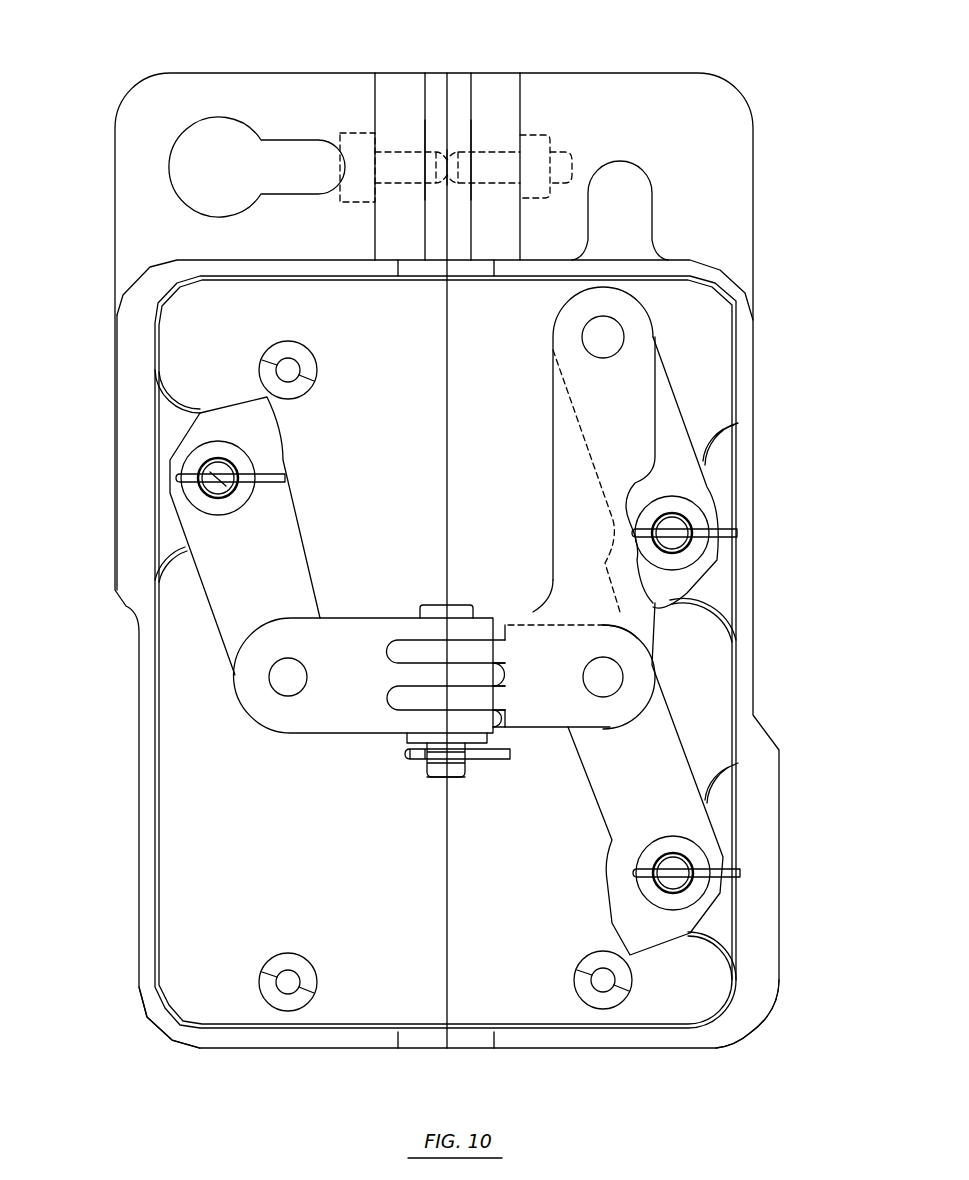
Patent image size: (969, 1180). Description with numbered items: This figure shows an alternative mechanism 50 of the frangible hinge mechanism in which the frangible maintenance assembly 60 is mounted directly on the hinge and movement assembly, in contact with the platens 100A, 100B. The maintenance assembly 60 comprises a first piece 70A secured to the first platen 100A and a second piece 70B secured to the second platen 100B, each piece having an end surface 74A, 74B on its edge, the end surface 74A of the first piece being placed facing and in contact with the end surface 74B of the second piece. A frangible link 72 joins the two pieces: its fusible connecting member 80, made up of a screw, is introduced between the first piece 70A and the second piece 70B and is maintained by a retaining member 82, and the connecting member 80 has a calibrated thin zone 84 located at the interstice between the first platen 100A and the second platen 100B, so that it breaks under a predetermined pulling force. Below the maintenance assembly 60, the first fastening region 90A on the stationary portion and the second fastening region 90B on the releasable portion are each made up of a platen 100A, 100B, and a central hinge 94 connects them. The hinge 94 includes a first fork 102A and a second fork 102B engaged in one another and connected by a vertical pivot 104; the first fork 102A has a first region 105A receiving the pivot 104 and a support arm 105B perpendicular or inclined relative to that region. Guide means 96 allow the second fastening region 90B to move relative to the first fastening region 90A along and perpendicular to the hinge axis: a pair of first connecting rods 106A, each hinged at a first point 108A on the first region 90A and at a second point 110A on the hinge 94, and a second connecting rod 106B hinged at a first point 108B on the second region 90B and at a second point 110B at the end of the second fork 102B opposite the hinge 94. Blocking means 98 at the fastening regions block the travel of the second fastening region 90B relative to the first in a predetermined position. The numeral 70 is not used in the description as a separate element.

The alternative mechanism 50 is at (120, 814).
The frangible maintenance assembly 60 is at (772, 156).
The housing body 70 is at (765, 520).
The first piece 70A is at (710, 105).
The second piece 70B is at (252, 98).
The frangible link 72 is at (437, 125).
The end surface 74A is at (442, 150).
The end surface 74B is at (450, 232).
The connecting member 80 is at (358, 152).
The retaining member 82 is at (540, 140).
The calibrated thin zone 84 is at (440, 183).
The first fastening region 90A is at (667, 1080).
The second fastening region 90B is at (152, 1038).
The central hinge 94 is at (456, 590).
The guide means 96 is at (285, 752).
The blocking means 98 is at (100, 498).
The first platen 100A is at (655, 1003).
The second platen 100B is at (193, 940).
The first fork 102A is at (544, 717).
The second fork 102B is at (342, 712).
The pivot 104 is at (430, 605).
The first region 105A is at (543, 650).
The support arm 105B is at (556, 397).
The first connecting rod 106A is at (670, 442).
The second connecting rod 106B is at (227, 558).
The first point 108A is at (688, 550).
The first point 108B is at (233, 490).
The second point 110A is at (603, 682).
The second point 110B is at (288, 677).